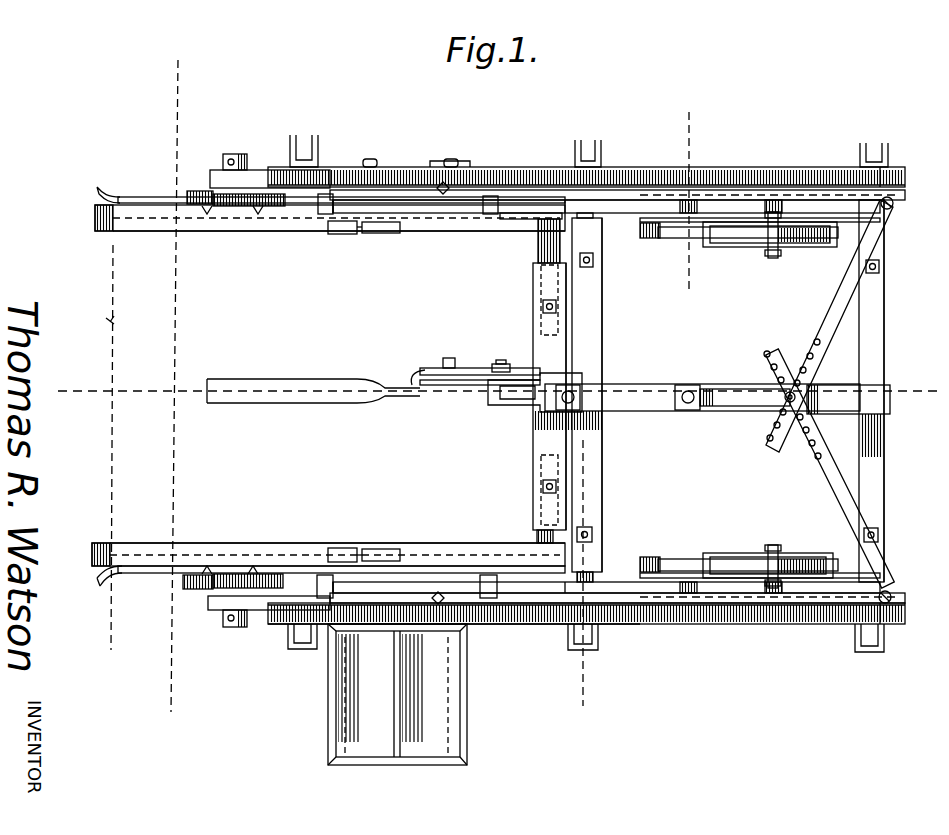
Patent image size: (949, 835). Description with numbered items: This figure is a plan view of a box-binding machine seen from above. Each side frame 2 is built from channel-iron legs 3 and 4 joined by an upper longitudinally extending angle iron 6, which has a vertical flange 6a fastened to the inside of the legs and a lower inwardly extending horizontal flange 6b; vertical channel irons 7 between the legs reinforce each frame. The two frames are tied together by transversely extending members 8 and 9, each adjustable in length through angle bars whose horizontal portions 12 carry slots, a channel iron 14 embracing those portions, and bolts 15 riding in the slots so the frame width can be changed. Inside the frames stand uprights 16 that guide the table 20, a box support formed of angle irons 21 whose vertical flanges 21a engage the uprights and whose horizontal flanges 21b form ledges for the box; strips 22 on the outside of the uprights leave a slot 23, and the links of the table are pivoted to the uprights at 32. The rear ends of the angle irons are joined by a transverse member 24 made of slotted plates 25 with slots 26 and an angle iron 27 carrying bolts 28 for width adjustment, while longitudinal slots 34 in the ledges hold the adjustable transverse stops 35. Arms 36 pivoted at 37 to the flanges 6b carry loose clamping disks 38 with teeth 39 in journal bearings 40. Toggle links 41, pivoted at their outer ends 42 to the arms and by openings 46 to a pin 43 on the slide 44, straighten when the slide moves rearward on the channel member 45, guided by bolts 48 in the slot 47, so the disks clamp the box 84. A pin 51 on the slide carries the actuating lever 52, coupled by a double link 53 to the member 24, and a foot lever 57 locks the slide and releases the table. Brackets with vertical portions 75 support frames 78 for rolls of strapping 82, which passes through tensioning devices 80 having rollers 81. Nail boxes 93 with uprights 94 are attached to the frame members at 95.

The side frame 2 is at (135, 85).
The leg 3 is at (68, 425).
The leg 4 is at (868, 146).
The upper longitudinally extending member 6 is at (545, 169).
The vertical flange 6a is at (661, 626).
The horizontal flange 6b is at (628, 176).
The vertical channel iron 7 is at (595, 140).
The transversely extending member 8 is at (884, 320).
The transversely extending member 9 is at (602, 340).
The horizontal portion 12 is at (892, 581).
The channel iron 14 is at (602, 370).
The bolt 15 is at (593, 260).
The upright 16 is at (319, 216).
The table 20 is at (532, 308).
The angle iron 21 is at (206, 236).
The vertical flange 21a is at (121, 195).
The horizontal flange 21b is at (118, 227).
The strip 22 is at (140, 197).
The slot 23 is at (468, 213).
The transverse member 24 is at (549, 396).
The plate 25 is at (543, 250).
The slot 26 is at (555, 292).
The angle iron 27 is at (566, 352).
The bolt 28 is at (557, 311).
The pivotal connection 32 is at (420, 236).
The longitudinal slot 34 is at (340, 234).
The transverse stop 35 is at (368, 233).
The arm 36 is at (718, 185).
The pivot 37 is at (426, 393).
The disk 38 is at (187, 194).
The tooth 39 is at (207, 216).
The journal bearing 40 is at (240, 154).
The link 41 is at (827, 300).
The outer end 42 is at (892, 208).
The pin 43 is at (810, 415).
The slide 44 is at (645, 383).
The channel member 45 is at (880, 393).
The opening 46 is at (772, 352).
The slot 47 is at (733, 406).
The guiding bolt 48 is at (597, 412).
The pin 51 is at (509, 366).
The actuating lever 52 is at (468, 380).
The double link 53 is at (413, 366).
The foot lever 57 is at (290, 403).
The vertical portion 75 is at (512, 219).
The supporting frame 78 is at (757, 245).
The tensioning device 80 is at (606, 400).
The roller 81 is at (648, 240).
The strapping or wire 82 is at (702, 238).
The box 84 is at (96, 311).
The nail box 93 is at (397, 694).
The vertical upright 94 is at (440, 163).
The attachment of nail box 95 is at (360, 152).